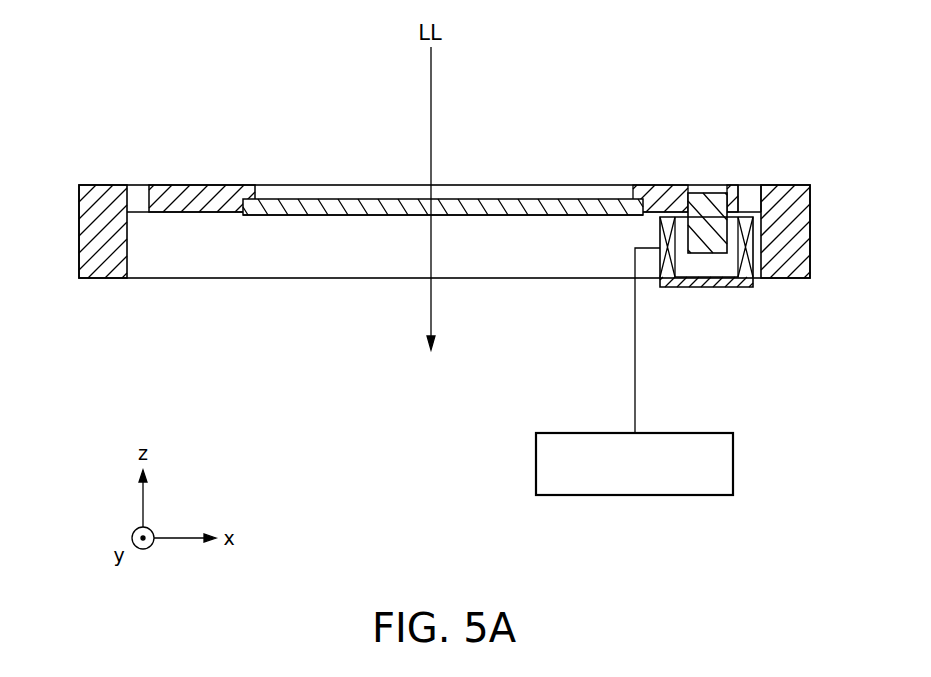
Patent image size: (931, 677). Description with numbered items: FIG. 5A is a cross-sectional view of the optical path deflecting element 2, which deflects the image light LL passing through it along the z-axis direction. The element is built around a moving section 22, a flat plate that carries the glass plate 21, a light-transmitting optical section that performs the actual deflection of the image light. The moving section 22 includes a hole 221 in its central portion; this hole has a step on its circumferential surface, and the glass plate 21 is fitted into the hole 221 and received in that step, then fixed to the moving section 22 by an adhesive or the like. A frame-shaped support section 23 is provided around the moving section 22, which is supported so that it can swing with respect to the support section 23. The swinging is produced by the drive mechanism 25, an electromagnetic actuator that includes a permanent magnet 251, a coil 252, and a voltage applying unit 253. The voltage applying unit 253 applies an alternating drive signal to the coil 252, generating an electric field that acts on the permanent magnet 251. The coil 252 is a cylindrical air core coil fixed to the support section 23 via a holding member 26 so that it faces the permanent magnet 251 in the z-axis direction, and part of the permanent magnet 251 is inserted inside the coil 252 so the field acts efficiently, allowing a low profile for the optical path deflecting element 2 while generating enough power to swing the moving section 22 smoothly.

The optical path deflecting element 2 is at (152, 145).
The glass plate 21 is at (563, 215).
The moving section 22 is at (197, 194).
The hole 221 is at (308, 197).
The support section 23 is at (103, 268).
The drive mechanism 25 is at (756, 158).
The permanent magnet 251 is at (711, 205).
The coil 252 is at (660, 233).
The voltage applying unit 253 is at (645, 496).
The holding member 26 is at (707, 288).